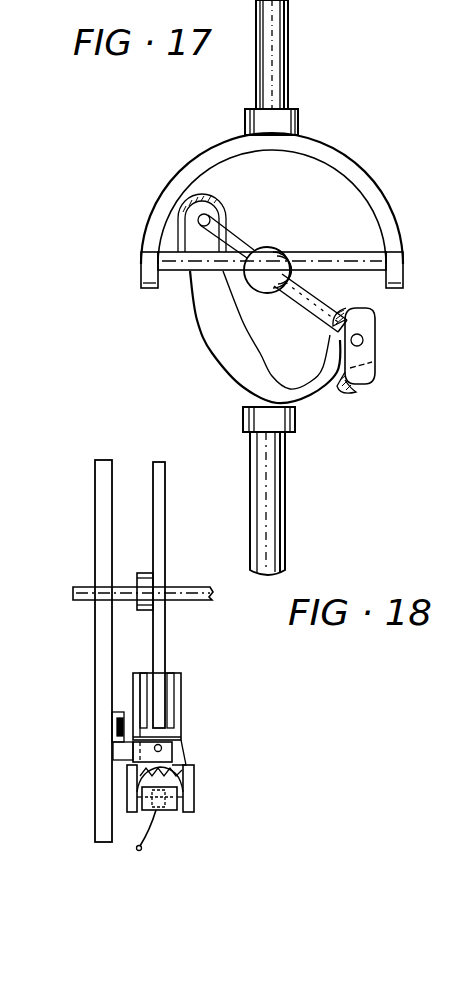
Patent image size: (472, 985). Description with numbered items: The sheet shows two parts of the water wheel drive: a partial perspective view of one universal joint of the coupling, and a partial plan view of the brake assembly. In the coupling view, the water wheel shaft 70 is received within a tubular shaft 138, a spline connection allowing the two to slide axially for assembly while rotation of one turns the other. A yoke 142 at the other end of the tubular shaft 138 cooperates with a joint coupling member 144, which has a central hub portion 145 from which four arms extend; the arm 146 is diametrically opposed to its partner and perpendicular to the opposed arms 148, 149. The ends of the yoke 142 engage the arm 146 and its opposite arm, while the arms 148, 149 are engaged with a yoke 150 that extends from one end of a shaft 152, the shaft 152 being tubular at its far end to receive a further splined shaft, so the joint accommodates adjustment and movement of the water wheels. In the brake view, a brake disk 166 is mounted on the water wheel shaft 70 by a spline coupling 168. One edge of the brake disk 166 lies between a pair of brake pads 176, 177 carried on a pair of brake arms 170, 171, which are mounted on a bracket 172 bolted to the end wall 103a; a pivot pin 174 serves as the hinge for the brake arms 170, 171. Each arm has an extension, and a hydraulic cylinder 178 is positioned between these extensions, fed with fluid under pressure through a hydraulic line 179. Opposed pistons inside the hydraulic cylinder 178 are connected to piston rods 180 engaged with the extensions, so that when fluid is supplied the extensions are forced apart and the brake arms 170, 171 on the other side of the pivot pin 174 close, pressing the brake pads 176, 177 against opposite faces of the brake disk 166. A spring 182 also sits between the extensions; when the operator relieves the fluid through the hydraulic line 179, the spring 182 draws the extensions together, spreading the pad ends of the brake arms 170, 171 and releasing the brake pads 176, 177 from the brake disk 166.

In FIG. 17, the shaft 152 is at (289, 54).
In FIG. 17, the yoke 150 is at (372, 192).
In FIG. 17, the arm 149 is at (345, 253).
In FIG. 17, the arm 146 is at (183, 217).
In FIG. 17, the central hub portion 145 is at (268, 248).
In FIG. 17, the joint coupling member 144 is at (268, 312).
In FIG. 17, the arm 148 is at (192, 288).
In FIG. 17, the yoke 142 is at (375, 382).
In FIG. 17, the tubular shaft 138 is at (285, 487).
In FIG. 18, the end wall 103a is at (96, 668).
In FIG. 18, the brake disk 166 is at (165, 498).
In FIG. 18, the water wheel shaft 70 is at (83, 587).
In FIG. 18, the spline coupling 168 is at (147, 573).
In FIG. 18, the brake arm 171 is at (183, 697).
In FIG. 18, the brake arm 170 is at (137, 672).
In FIG. 18, the brake pad 176 is at (143, 675).
In FIG. 18, the brake pad 177 is at (173, 675).
In FIG. 18, the bracket 172 is at (125, 752).
In FIG. 18, the pivot pin 174 is at (162, 748).
In FIG. 18, the spring 182 is at (190, 770).
In FIG. 18, the piston rods 180 is at (192, 812).
In FIG. 18, the hydraulic cylinder 178 is at (170, 812).
In FIG. 18, the hydraulic line 179 is at (150, 850).